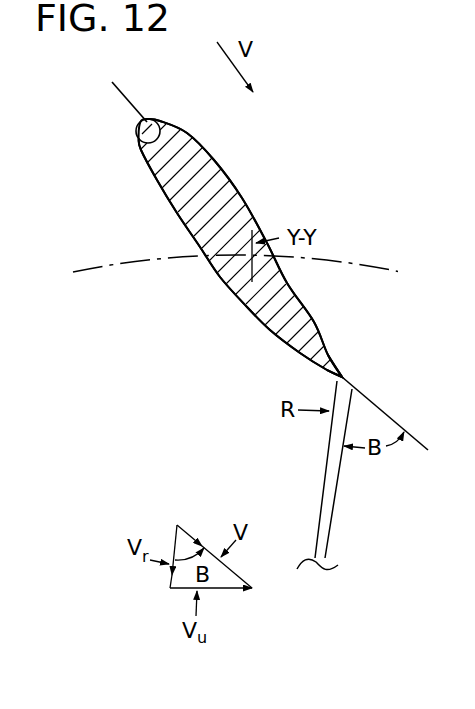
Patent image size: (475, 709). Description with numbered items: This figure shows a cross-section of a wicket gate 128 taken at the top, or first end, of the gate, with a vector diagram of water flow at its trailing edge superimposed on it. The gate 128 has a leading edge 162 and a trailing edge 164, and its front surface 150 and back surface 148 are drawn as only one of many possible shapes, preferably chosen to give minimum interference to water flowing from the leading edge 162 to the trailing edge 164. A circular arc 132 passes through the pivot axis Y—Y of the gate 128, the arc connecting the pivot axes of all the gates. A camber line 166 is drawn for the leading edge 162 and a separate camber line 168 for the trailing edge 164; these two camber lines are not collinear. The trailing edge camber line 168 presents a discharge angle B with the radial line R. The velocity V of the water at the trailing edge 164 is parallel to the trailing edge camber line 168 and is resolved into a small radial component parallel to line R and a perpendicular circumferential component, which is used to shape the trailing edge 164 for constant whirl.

The wicket gate 128 is at (211, 146).
The circular arc 132 is at (351, 262).
The back surface 148 is at (241, 208).
The front surface 150 is at (176, 221).
The leading edge 162 is at (150, 117).
The trailing edge 164 is at (345, 364).
The leading edge camber line 166 is at (127, 110).
The trailing edge camber line 168 is at (421, 437).